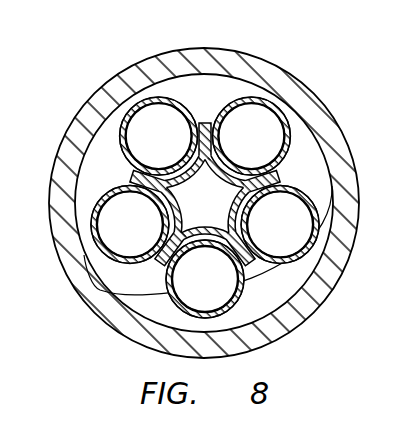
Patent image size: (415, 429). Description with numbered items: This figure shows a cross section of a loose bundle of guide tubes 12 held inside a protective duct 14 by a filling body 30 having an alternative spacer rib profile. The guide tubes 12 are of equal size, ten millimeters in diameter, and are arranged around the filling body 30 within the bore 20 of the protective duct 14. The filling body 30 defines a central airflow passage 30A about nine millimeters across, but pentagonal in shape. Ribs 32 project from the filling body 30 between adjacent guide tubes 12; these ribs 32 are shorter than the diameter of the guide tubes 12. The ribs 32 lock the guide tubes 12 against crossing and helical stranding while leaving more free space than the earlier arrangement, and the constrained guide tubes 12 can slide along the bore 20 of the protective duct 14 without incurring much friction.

The protective duct 14 is at (142, 62).
The bore 20 is at (337, 232).
The guide tubes 12 is at (273, 107).
The filling body 30 is at (203, 174).
The airflow passage 30A is at (246, 221).
The ribs 32 is at (291, 169).